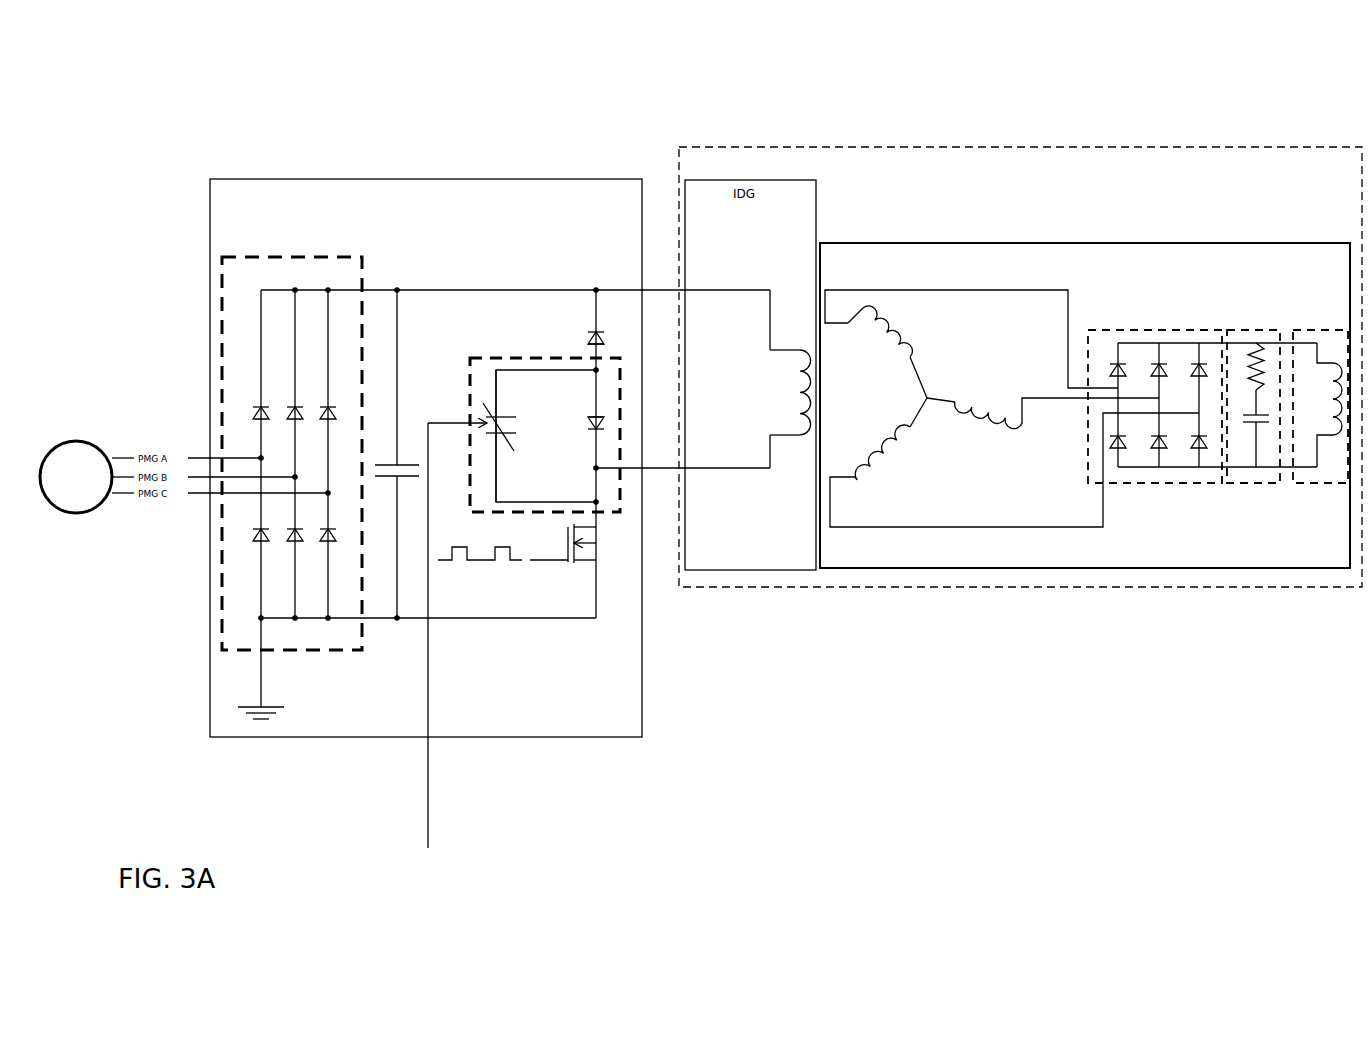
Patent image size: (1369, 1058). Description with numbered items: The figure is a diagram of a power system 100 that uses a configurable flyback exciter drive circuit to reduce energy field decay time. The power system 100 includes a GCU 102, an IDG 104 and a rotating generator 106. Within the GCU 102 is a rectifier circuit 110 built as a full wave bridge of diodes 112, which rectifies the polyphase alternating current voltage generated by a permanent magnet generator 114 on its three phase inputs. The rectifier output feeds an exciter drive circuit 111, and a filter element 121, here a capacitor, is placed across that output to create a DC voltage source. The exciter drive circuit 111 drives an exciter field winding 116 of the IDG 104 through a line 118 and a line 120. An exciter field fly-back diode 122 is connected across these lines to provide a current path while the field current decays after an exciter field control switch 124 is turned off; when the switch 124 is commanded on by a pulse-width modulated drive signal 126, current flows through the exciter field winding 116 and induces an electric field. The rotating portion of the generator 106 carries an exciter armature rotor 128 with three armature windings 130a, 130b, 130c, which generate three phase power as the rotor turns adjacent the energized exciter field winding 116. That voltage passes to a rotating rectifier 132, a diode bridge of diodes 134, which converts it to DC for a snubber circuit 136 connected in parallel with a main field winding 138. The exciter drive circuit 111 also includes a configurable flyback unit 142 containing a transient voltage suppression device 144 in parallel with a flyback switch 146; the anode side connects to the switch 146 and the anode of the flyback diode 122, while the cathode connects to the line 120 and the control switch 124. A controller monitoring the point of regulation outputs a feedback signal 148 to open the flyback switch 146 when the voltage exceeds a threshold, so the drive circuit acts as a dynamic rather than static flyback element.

The power system 100 is at (176, 124).
The GCU 102 is at (395, 178).
The IDG 104 is at (705, 143).
The rotating generator 106 is at (1090, 241).
The rectifier circuit 110 is at (303, 255).
The exciter drive circuit 111 is at (525, 289).
The diodes 112 is at (261, 405).
The permanent magnet generator 114 is at (75, 443).
The exciter field winding 116 is at (796, 391).
The line 118 is at (665, 288).
The line 120 is at (667, 470).
The filter element 121 is at (409, 456).
The exciter field fly-back diode 122 is at (587, 331).
The exciter field control switch 124 is at (572, 563).
The pulse-width modulated drive signal 126 is at (496, 563).
The exciter armature rotor 128 is at (1012, 408).
The armature winding 130a is at (888, 335).
The armature winding 130b is at (890, 473).
The armature winding 130c is at (992, 430).
The rotating rectifier 132 is at (1202, 398).
The diodes 134 is at (1120, 450).
The snubber circuit 136 is at (1248, 327).
The main field winding 138 is at (1313, 327).
The configurable flyback unit 142 is at (472, 353).
The transient voltage suppression device 144 is at (587, 418).
The flyback switch 146 is at (504, 411).
The feedback signal 148 is at (430, 785).